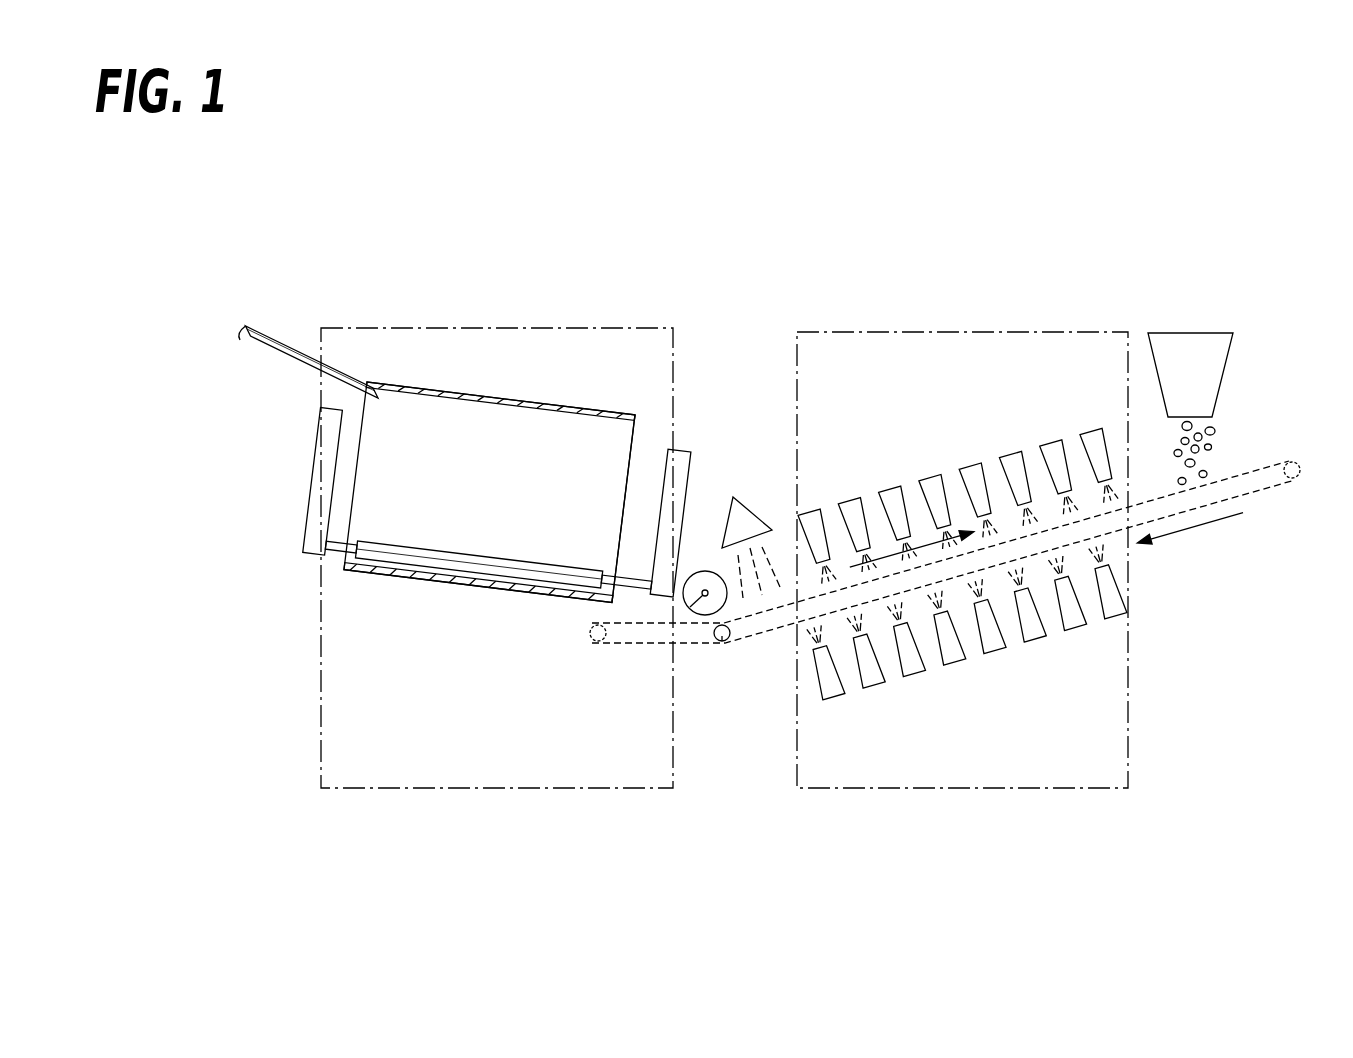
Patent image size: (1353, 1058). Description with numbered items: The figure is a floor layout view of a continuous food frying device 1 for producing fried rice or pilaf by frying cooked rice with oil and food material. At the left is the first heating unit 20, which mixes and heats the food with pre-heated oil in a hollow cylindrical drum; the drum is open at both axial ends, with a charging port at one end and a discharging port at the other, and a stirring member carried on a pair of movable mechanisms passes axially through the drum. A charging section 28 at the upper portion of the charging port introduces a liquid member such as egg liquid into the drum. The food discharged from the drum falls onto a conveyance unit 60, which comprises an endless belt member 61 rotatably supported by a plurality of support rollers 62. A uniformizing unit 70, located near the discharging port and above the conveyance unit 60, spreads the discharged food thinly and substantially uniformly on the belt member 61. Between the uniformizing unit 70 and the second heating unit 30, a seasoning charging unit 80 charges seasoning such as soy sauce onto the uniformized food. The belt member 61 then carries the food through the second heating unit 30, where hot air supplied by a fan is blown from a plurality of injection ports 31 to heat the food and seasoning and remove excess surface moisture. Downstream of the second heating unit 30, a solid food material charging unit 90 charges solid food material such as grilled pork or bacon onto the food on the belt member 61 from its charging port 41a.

The continuous food frying device 1 is at (1035, 163).
The first heating unit 20 is at (461, 294).
The charging section 28 is at (268, 332).
The second heating unit 30 is at (931, 303).
The injection ports 31 is at (934, 478).
The charging port 41a is at (1205, 418).
The conveyance unit 60 is at (738, 655).
The belt member 61 is at (757, 633).
The support rollers 62 is at (598, 643).
The uniformizing unit 70 is at (698, 550).
The seasoning charging unit 80 is at (733, 497).
The solid food material charging unit 90 is at (1183, 333).